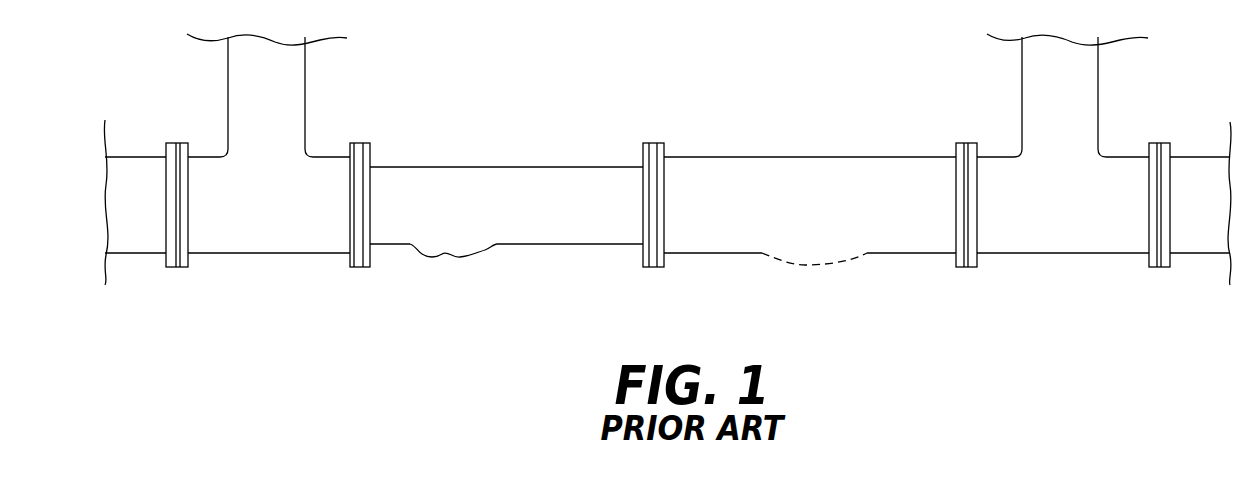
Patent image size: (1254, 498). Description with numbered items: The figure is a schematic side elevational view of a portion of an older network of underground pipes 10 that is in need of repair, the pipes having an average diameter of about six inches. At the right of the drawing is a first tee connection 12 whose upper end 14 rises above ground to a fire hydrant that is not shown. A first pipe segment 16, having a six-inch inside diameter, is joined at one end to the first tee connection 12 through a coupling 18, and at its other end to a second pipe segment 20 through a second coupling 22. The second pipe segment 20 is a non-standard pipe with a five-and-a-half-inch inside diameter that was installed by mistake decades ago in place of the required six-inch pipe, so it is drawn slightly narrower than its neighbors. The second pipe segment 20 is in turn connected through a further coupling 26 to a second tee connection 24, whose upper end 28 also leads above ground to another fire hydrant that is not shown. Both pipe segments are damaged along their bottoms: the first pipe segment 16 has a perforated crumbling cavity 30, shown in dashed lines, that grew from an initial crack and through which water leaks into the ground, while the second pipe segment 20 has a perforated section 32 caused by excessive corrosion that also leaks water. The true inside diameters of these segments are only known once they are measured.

The network of underground pipes 10 is at (607, 56).
The first tee connection 12 is at (1065, 230).
The upper end 14 is at (1098, 71).
The first pipe segment 16 is at (840, 175).
The coupling 18 is at (975, 267).
The second pipe segment 20 is at (498, 182).
The second coupling 22 is at (645, 254).
The second tee connection 24 is at (264, 238).
The coupling 26 is at (352, 145).
The upper end 28 is at (228, 81).
The perforated crumbling cavity 30 is at (810, 268).
The perforated section 32 is at (452, 247).